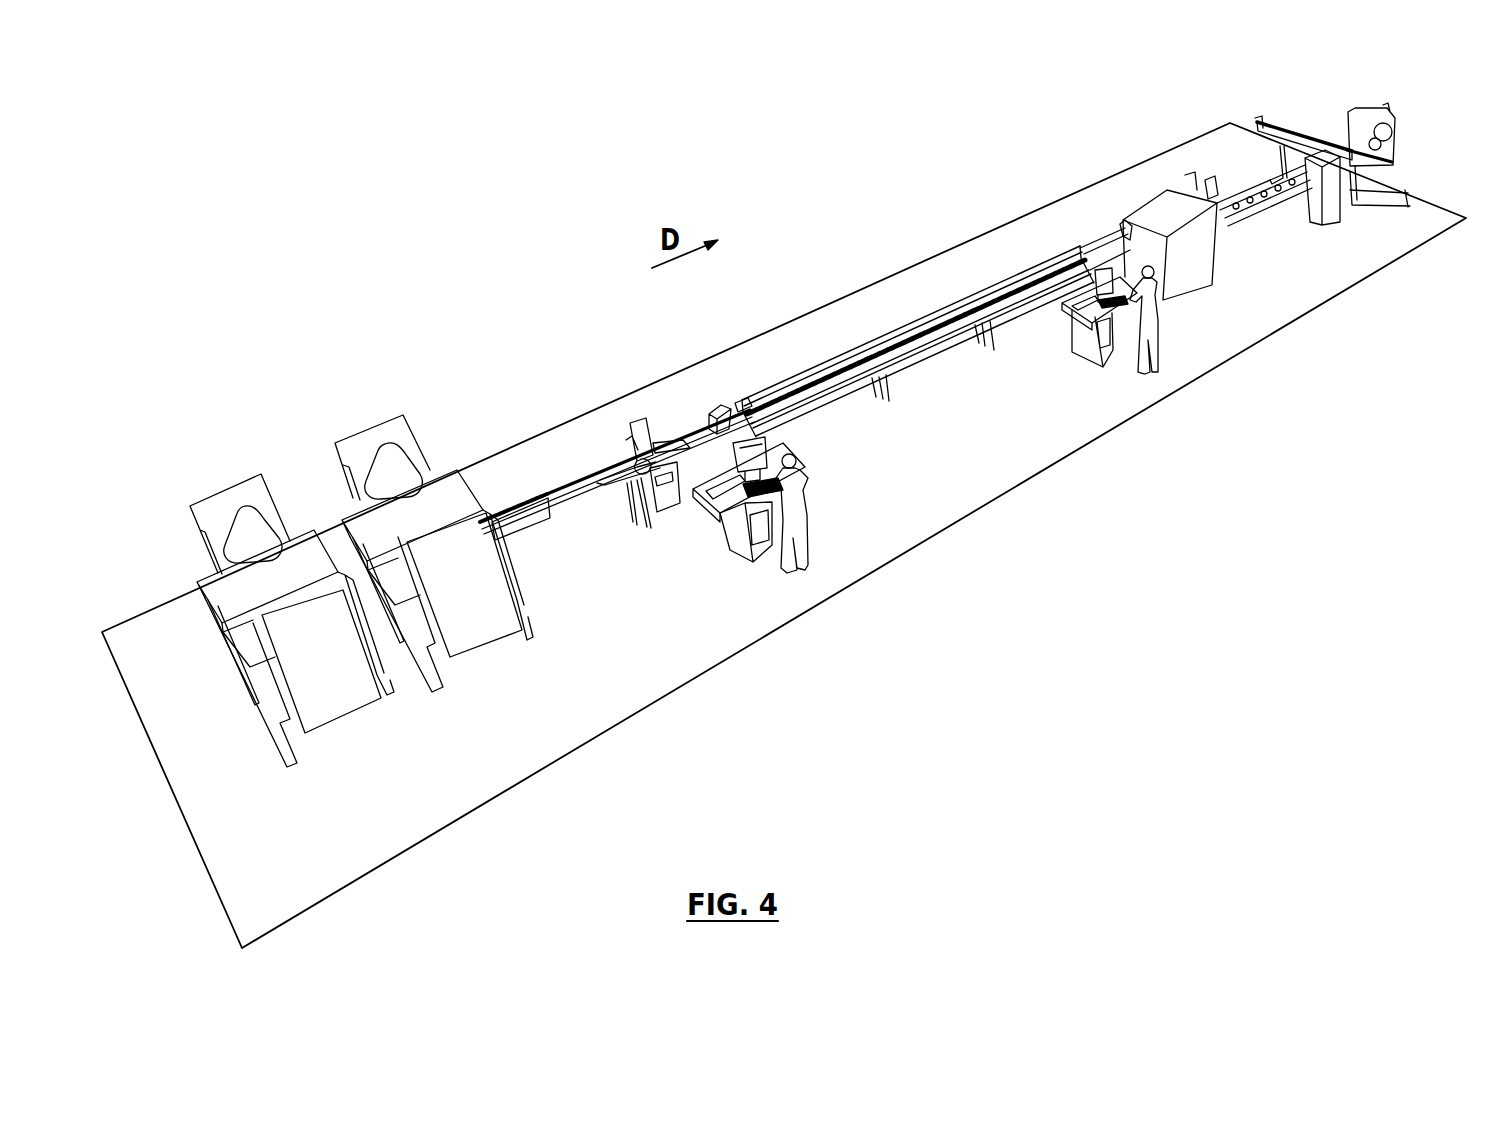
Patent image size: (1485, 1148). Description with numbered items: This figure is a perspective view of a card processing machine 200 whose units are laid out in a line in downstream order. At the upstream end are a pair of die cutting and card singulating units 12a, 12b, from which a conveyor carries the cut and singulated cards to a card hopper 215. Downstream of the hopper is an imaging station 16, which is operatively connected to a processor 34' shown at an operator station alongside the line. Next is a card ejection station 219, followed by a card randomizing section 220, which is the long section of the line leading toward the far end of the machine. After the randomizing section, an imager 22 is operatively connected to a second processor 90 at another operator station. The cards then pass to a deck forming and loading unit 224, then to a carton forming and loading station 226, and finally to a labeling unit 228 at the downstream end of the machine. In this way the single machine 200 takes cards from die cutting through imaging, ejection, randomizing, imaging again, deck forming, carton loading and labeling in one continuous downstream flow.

The card processing machine 200 is at (556, 245).
The first fuel tank forming machine 12a is at (214, 500).
The second fuel tank forming machine 12b is at (355, 446).
The card hopper 215 is at (651, 411).
The imaging station 16 is at (712, 404).
The card ejection station 219 is at (738, 394).
The card randomizing section 220 is at (925, 372).
The processor 34' is at (737, 520).
The imager 22 is at (1120, 230).
The deck forming and loading unit 224 is at (1180, 292).
The processor 90 is at (1085, 335).
The carton forming and loading station 226 is at (1245, 250).
The labeling unit 228 is at (1300, 140).